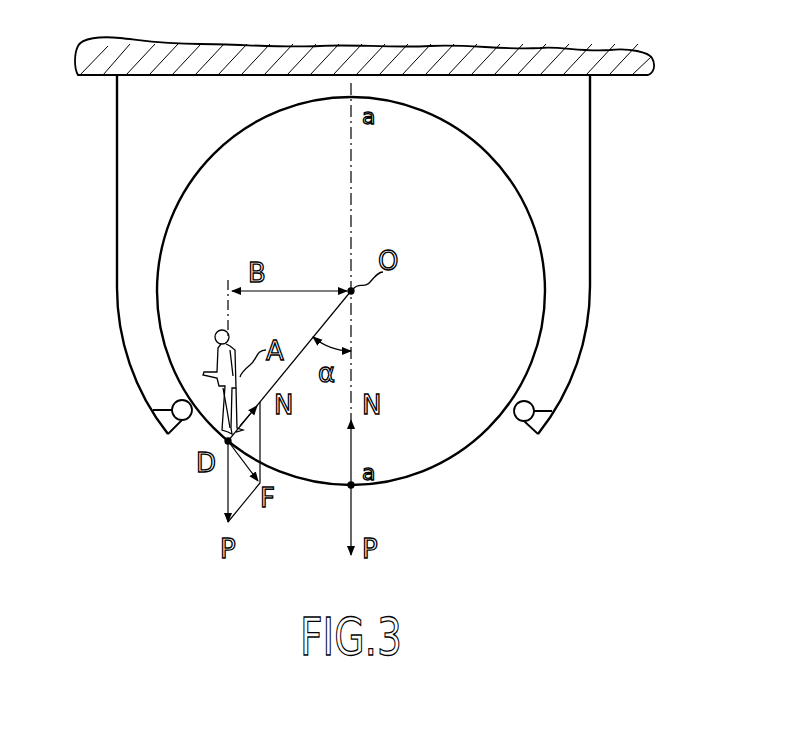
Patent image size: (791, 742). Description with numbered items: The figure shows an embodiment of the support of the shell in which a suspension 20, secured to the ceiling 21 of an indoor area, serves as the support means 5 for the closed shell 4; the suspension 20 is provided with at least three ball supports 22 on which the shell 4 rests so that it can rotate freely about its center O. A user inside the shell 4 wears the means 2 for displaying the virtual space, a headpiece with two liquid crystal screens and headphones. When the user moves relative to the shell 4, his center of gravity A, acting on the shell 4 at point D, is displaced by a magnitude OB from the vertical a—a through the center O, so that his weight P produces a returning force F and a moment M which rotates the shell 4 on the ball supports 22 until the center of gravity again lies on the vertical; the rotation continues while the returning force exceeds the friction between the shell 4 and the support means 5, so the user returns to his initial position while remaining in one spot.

The means for displaying the virtual space 2 is at (221, 335).
The closed shell 4 is at (516, 178).
The support means 5 is at (549, 445).
The suspension 20 is at (591, 296).
The ceiling 21 is at (103, 62).
The ball supports 22 is at (156, 402).